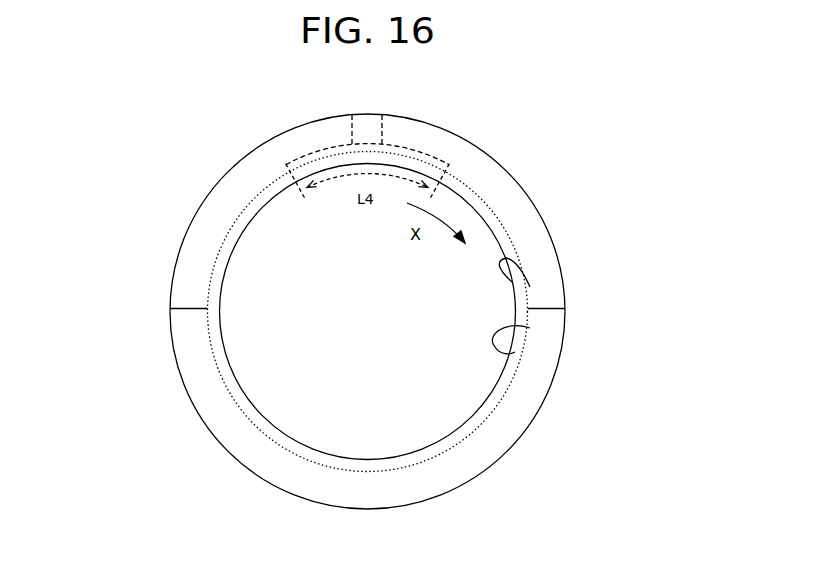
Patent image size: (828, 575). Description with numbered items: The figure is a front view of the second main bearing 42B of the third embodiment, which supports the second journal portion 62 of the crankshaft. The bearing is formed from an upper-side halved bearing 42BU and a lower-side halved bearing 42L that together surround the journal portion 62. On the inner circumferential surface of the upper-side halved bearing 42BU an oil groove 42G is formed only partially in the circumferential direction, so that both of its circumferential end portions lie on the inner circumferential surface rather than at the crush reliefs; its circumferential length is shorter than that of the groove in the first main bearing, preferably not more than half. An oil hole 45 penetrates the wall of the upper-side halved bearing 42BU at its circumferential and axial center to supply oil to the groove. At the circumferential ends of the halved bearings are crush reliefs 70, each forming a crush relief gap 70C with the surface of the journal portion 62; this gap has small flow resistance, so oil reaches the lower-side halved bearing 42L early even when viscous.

The second main bearing 42B is at (203, 192).
The upper-side halved bearing 42BU is at (187, 238).
The lower-side halved bearing 42L is at (189, 358).
The oil groove 42G is at (333, 147).
The oil hole 45 is at (374, 120).
The crush relief 70 is at (507, 256).
The crush relief gap 70C is at (523, 300).
The second journal portion 62 is at (453, 392).